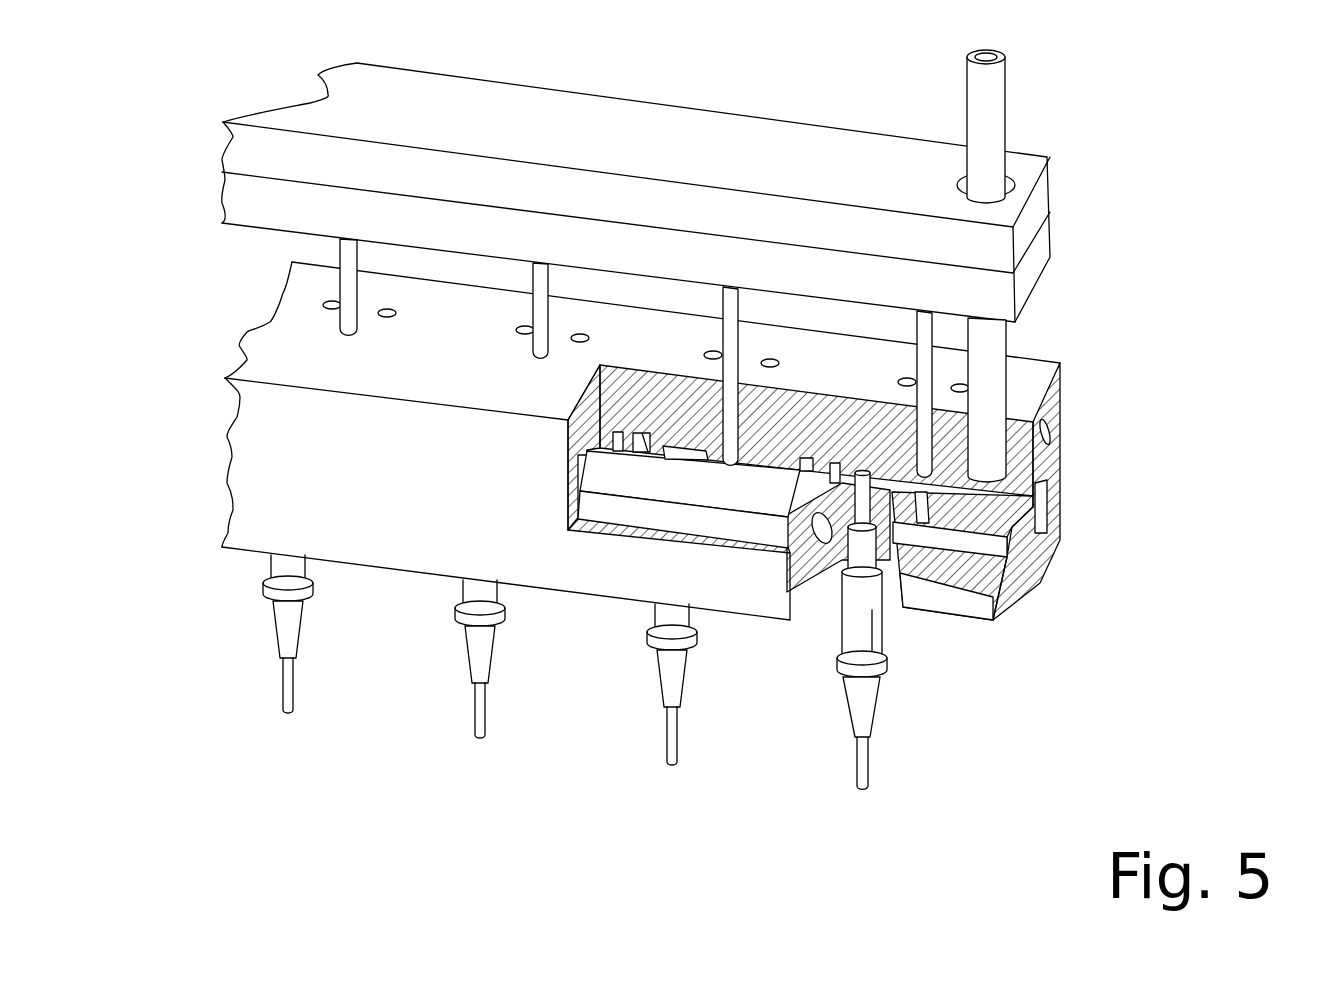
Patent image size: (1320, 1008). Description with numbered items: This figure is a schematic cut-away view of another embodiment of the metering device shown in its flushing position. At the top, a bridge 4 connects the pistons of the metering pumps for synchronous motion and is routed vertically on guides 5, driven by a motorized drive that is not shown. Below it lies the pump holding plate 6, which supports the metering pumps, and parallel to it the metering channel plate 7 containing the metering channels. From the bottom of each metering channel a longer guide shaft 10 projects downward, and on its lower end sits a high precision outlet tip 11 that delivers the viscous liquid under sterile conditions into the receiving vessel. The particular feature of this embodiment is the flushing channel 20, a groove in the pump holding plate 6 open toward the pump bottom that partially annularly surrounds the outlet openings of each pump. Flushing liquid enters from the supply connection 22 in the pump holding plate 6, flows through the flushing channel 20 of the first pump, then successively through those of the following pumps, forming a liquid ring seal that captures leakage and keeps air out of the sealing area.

The bridge 4 is at (1040, 195).
The guides 5 is at (1000, 110).
The pump holding plate 6 is at (1050, 448).
The metering channel plate 7 is at (1060, 537).
The guide shaft 10 is at (883, 620).
The outlet tip 11 is at (868, 717).
The flushing channel 20 is at (1030, 503).
The supply connection 22 is at (1063, 417).